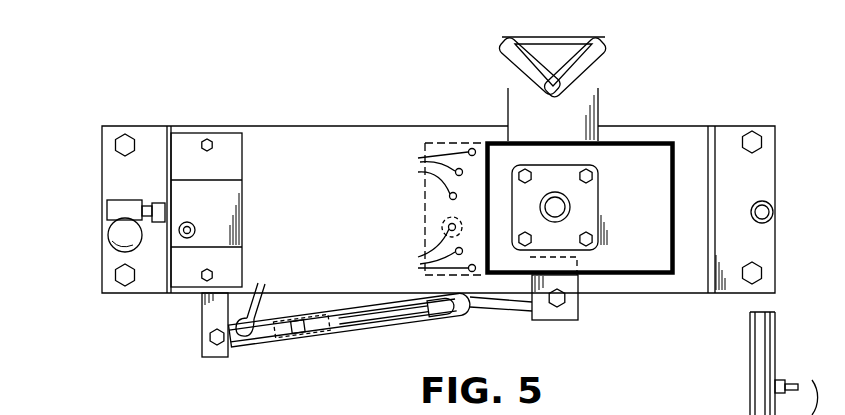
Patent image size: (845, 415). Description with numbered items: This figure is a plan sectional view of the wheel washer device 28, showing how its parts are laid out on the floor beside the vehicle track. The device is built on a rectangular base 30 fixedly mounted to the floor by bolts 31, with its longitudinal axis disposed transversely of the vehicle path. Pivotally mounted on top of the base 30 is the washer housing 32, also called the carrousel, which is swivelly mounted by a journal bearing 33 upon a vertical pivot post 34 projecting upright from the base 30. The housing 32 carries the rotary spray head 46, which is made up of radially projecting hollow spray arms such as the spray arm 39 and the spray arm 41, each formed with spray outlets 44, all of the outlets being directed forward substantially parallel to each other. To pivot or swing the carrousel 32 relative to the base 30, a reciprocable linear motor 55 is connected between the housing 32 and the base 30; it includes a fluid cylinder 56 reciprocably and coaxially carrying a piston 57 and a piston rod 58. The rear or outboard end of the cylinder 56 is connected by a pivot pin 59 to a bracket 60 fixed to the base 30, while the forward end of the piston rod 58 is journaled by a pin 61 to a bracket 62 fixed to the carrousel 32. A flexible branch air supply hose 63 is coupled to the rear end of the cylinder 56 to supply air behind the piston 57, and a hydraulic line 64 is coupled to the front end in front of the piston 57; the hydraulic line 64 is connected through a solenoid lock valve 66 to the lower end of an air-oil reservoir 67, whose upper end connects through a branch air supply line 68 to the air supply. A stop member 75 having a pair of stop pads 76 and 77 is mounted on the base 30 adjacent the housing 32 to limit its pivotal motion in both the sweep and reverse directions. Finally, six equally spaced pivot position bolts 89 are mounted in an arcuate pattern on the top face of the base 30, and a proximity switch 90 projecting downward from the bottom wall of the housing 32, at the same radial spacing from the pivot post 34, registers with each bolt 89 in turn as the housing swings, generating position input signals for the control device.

The wheel washer device 28 is at (787, 92).
The rectangular base 30 is at (393, 207).
The bolts 31 is at (116, 145).
The washer housing 32 is at (676, 178).
The journal bearing 33 is at (568, 208).
The vertical pivot post 34 is at (597, 199).
The spray arm 39 is at (763, 332).
The spray arm 41 is at (770, 204).
The spray outlets 44 is at (789, 387).
The rotary spray head 46 is at (724, 411).
The reciprocable linear motor 55 is at (346, 345).
The fluid cylinder 56 is at (388, 318).
The piston 57 is at (303, 338).
The piston rod 58 is at (487, 309).
The pivot pin 59 is at (210, 336).
The bracket 60 is at (214, 312).
The pin 61 is at (555, 304).
The bracket 62 is at (578, 309).
The branch air supply hose 63 is at (252, 287).
The hydraulic line 64 is at (415, 320).
The solenoid lock valve 66 is at (110, 208).
The air-oil reservoir 67 is at (226, 208).
The branch air supply line 68 is at (190, 223).
The stop member 75 is at (528, 52).
The stop pad 76 is at (603, 53).
The stop pad 77 is at (518, 65).
The pivot position bolts 89 is at (432, 214).
The proximity switch 90 is at (446, 228).